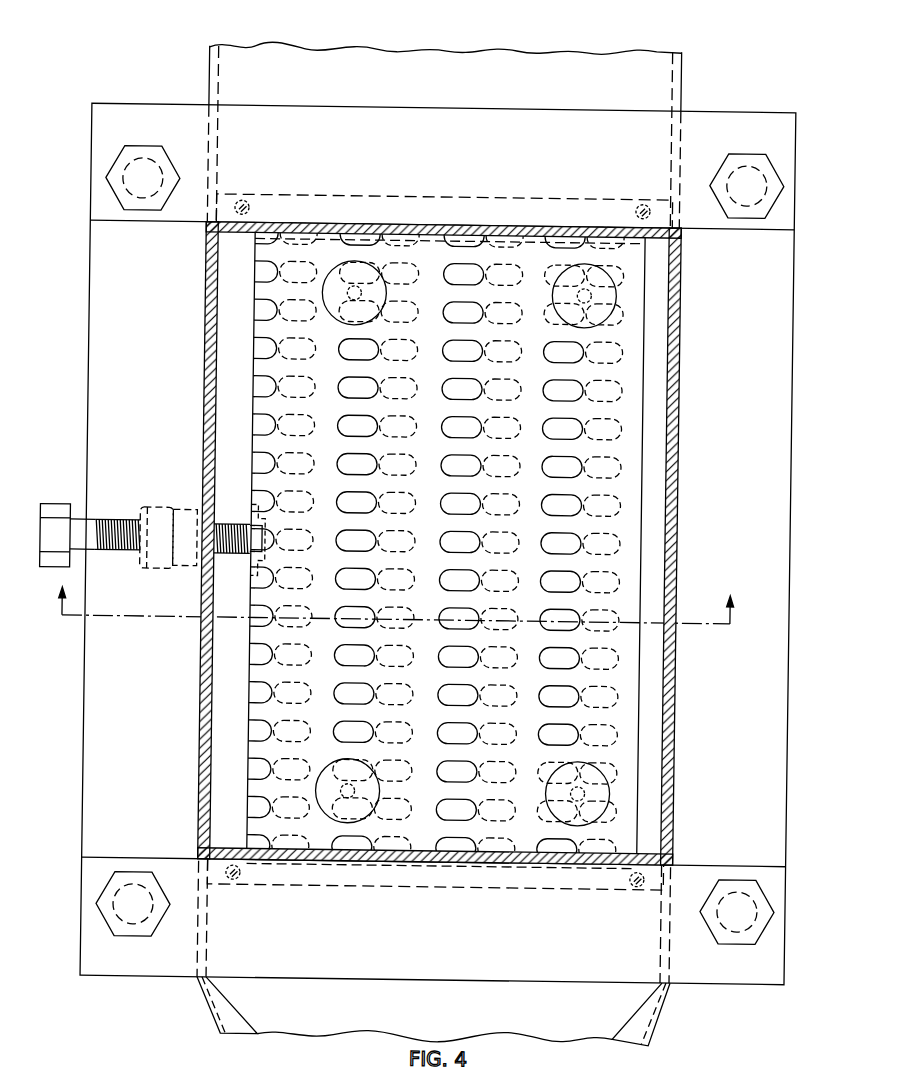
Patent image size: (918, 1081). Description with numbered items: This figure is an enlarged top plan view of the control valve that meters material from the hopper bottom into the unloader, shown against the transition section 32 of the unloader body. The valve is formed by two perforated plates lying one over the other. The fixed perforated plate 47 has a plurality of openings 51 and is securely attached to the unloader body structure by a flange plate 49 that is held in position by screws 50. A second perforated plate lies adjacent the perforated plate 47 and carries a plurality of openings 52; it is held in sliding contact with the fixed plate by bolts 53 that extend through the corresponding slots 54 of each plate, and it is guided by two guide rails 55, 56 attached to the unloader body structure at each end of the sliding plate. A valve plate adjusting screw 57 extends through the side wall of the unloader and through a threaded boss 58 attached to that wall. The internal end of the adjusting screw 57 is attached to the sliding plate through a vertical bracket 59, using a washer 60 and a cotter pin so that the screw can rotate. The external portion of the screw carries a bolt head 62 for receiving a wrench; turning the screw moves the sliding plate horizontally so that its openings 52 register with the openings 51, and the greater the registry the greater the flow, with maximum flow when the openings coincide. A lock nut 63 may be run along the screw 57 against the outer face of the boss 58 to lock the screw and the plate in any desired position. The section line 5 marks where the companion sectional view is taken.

The section line 5- 5 is at (395, 606).
The transition section 32 is at (213, 1005).
The perforated plate 47 is at (314, 264).
The flange plate 49 is at (293, 210).
The screws 50 is at (237, 203).
The openings 51 is at (450, 277).
The openings 52 is at (492, 276).
The bolts 53 is at (344, 265).
The slots 54 is at (368, 294).
The guide rail 55 is at (281, 235).
The guide rail 56 is at (288, 852).
The valve plate adjusting screw 57 is at (111, 526).
The threaded boss 58 is at (186, 515).
The vertical bracket 59 is at (254, 562).
The washer 60 is at (265, 552).
The bolt head 62 is at (64, 510).
The lock nut 63 is at (154, 513).